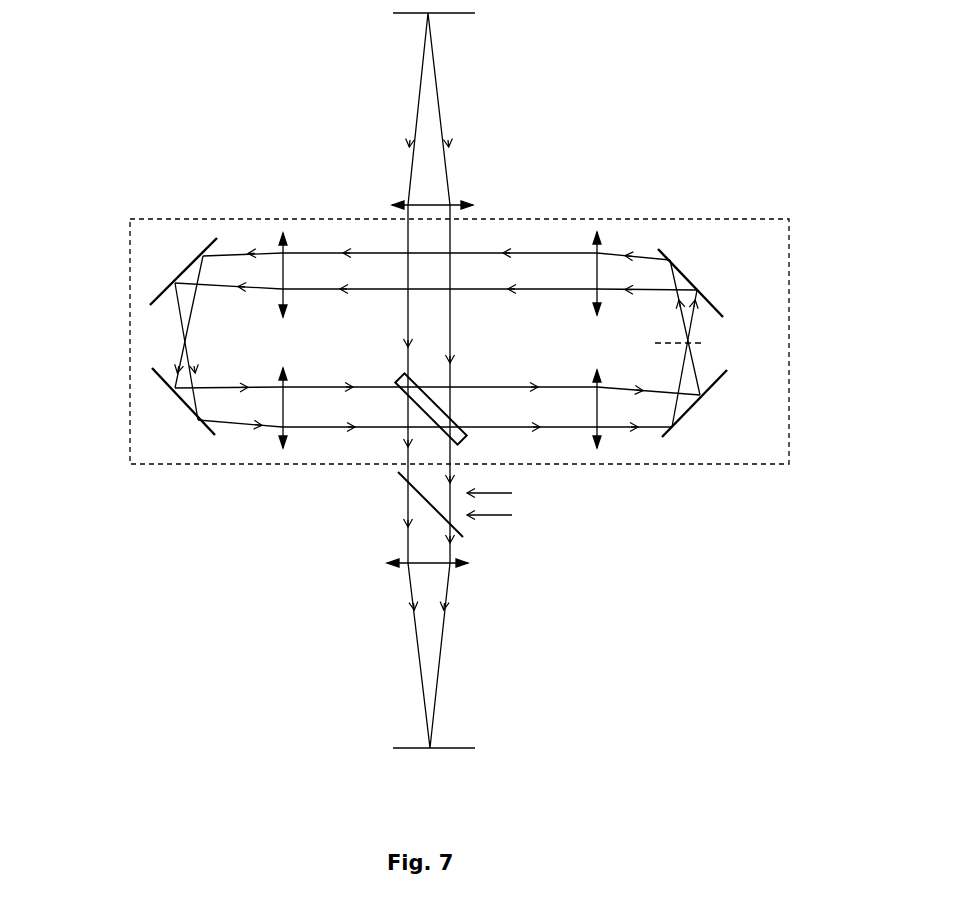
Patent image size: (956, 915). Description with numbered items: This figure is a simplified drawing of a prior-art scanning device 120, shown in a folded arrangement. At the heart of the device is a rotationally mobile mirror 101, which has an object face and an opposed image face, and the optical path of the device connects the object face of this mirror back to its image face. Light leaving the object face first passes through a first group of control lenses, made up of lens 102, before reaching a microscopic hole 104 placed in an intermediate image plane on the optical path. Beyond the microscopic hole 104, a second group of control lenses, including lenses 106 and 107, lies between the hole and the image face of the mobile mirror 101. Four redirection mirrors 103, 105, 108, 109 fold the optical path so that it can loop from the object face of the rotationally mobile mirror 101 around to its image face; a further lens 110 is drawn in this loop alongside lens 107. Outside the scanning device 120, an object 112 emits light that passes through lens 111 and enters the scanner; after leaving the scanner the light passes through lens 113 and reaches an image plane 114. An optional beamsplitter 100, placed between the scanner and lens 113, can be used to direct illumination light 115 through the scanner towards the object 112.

The beamsplitter 100 is at (398, 488).
The rotationally mobile mirror 101 is at (428, 387).
The control lens 102 is at (605, 450).
The redirection mirror 103 is at (693, 408).
The microscopic hole 104 is at (710, 340).
The redirection mirror 105 is at (683, 267).
The control lens 106 is at (594, 227).
The control lens 107 is at (278, 230).
The redirection mirror 108 is at (175, 270).
The redirection mirror 109 is at (150, 377).
The lens 110 is at (273, 450).
The lens 111 is at (394, 200).
The object 112 is at (405, 22).
The lens 113 is at (383, 568).
The image plane 114 is at (400, 740).
The illumination light 115 is at (507, 525).
The scanning device 120 is at (668, 215).